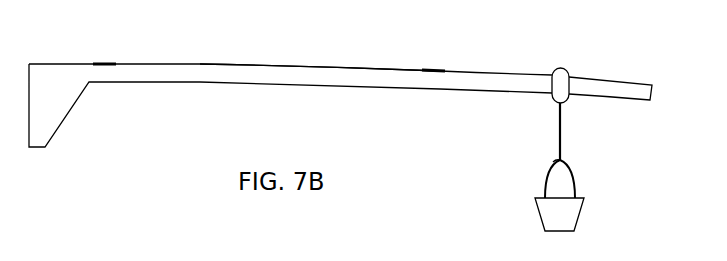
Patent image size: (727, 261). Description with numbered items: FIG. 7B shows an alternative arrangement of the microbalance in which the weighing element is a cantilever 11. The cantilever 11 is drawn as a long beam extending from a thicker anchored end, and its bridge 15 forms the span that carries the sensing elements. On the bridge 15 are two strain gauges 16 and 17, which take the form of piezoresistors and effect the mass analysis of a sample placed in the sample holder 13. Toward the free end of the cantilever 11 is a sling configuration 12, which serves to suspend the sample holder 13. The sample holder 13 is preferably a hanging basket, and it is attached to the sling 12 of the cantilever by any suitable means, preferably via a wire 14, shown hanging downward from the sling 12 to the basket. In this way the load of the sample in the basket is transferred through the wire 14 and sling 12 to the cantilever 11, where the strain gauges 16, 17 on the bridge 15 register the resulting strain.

The cantilever 11 is at (63, 63).
The sling configuration 12 is at (600, 80).
The sample holder 13 is at (578, 197).
The wire 14 is at (558, 128).
The bridge 15 is at (237, 64).
The strain gauge 16 is at (107, 63).
The strain gauge 17 is at (431, 70).